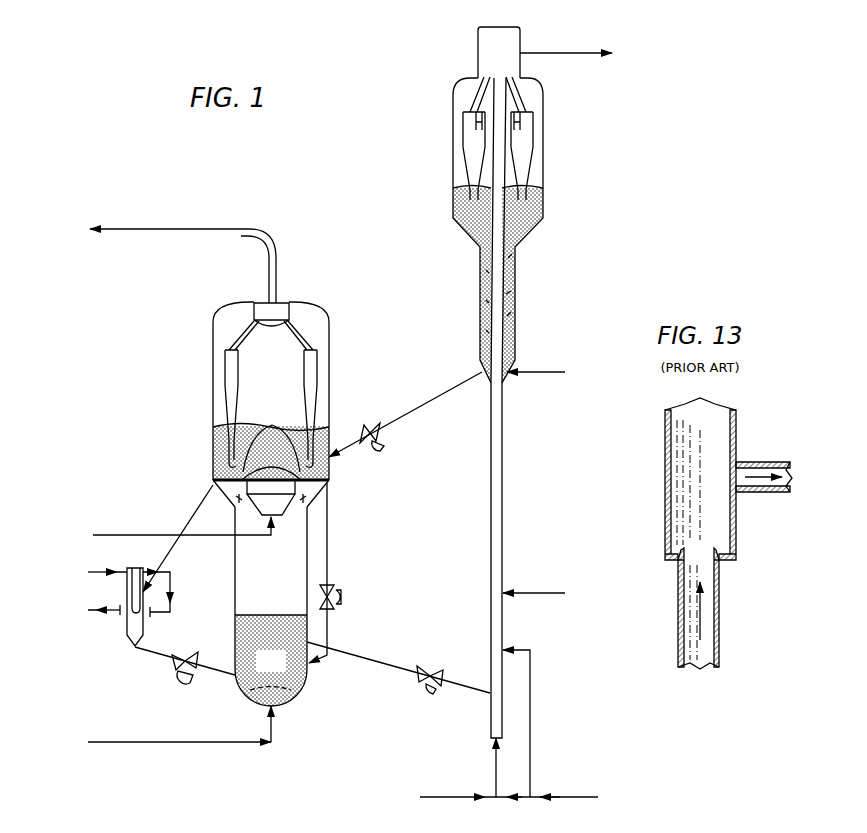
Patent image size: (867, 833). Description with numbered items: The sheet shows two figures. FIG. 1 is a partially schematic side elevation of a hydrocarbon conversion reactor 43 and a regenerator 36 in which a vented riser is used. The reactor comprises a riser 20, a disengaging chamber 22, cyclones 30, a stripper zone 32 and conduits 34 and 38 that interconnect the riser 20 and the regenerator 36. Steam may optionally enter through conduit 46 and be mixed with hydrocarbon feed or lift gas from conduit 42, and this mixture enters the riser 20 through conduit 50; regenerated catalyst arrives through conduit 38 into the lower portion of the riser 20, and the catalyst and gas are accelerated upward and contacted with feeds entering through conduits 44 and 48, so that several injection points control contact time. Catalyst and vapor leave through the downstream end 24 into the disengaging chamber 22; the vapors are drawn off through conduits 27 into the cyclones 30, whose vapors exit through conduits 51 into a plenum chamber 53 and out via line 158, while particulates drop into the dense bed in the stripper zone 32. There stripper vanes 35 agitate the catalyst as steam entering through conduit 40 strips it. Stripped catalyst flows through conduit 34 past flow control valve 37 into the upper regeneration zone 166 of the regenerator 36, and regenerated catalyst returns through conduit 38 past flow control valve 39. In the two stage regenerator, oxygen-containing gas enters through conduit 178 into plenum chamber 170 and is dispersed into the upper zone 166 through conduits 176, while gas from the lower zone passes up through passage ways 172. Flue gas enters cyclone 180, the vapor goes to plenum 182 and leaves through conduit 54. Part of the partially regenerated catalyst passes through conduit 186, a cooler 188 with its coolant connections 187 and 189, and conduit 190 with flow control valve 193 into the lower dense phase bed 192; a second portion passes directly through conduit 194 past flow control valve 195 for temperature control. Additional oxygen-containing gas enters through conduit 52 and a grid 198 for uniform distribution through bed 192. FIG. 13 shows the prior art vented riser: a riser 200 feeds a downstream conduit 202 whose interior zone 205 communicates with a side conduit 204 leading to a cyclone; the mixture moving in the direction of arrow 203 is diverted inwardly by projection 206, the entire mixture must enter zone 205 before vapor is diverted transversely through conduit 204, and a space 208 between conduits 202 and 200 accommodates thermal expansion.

In FIG. 1, the riser 20 is at (503, 520).
In FIG. 1, the disengaging chamber 22 is at (556, 180).
In FIG. 1, the downstream end 24 is at (500, 120).
In FIG. 1, the conduits 27 is at (478, 100).
In FIG. 1, the cyclones 30 is at (464, 140).
In FIG. 1, the stripper zone 32 is at (482, 313).
In FIG. 1, the conduit 34 is at (412, 407).
In FIG. 1, the stripper vanes 35 is at (510, 318).
In FIG. 1, the regenerator 36 is at (208, 368).
In FIG. 1, the flow control valve 37 is at (384, 447).
In FIG. 1, the conduit 38 is at (408, 670).
In FIG. 1, the flow control valve 39 is at (426, 695).
In FIG. 1, the conduit 40 is at (545, 372).
In FIG. 1, the conduit 42 is at (552, 797).
In FIG. 1, the hydrocarbon conversion reactor 43 is at (380, 187).
In FIG. 1, the conduit 44 is at (531, 692).
In FIG. 1, the conduit 46 is at (441, 797).
In FIG. 1, the conduit 48 is at (535, 593).
In FIG. 1, the conduit 50 is at (493, 775).
In FIG. 1, the conduits 51 is at (470, 92).
In FIG. 1, the conduit 52 is at (125, 742).
In FIG. 1, the plenum chamber 53 is at (484, 30).
In FIG. 1, the conduit 54 is at (278, 268).
In FIG. 1, the product vapor outlet 158 is at (575, 53).
In FIG. 1, the upper regeneration zone 166 is at (220, 447).
In FIG. 1, the plenum chamber 170 is at (285, 506).
In FIG. 1, the passage ways 172 is at (306, 497).
In FIG. 1, the conduits 176 is at (272, 427).
In FIG. 1, the conduit 178 is at (125, 535).
In FIG. 1, the cyclone 180 is at (303, 363).
In FIG. 1, the plenum 182 is at (262, 305).
In FIG. 1, the conduit 186 is at (199, 505).
In FIG. 1, the cooling fluid inlet 187 is at (100, 572).
In FIG. 1, the cooler 188 is at (128, 600).
In FIG. 1, the cooling fluid outlet 189 is at (106, 613).
In FIG. 1, the conduit 190 is at (152, 652).
In FIG. 1, the dense phase bed 192 is at (259, 671).
In FIG. 1, the flow control valve 193 is at (186, 684).
In FIG. 1, the conduit 194 is at (328, 540).
In FIG. 1, the flow control valve 195 is at (344, 597).
In FIG. 1, the grid 198 is at (288, 695).
In FIG. 13, the riser 200 is at (720, 655).
In FIG. 13, the downstream conduit 202 is at (737, 510).
In FIG. 13, the arrow 203 is at (702, 612).
In FIG. 13, the conduit 204 is at (762, 465).
In FIG. 13, the interior zone 205 is at (688, 513).
In FIG. 13, the projection 206 is at (672, 553).
In FIG. 13, the space 208 is at (727, 572).